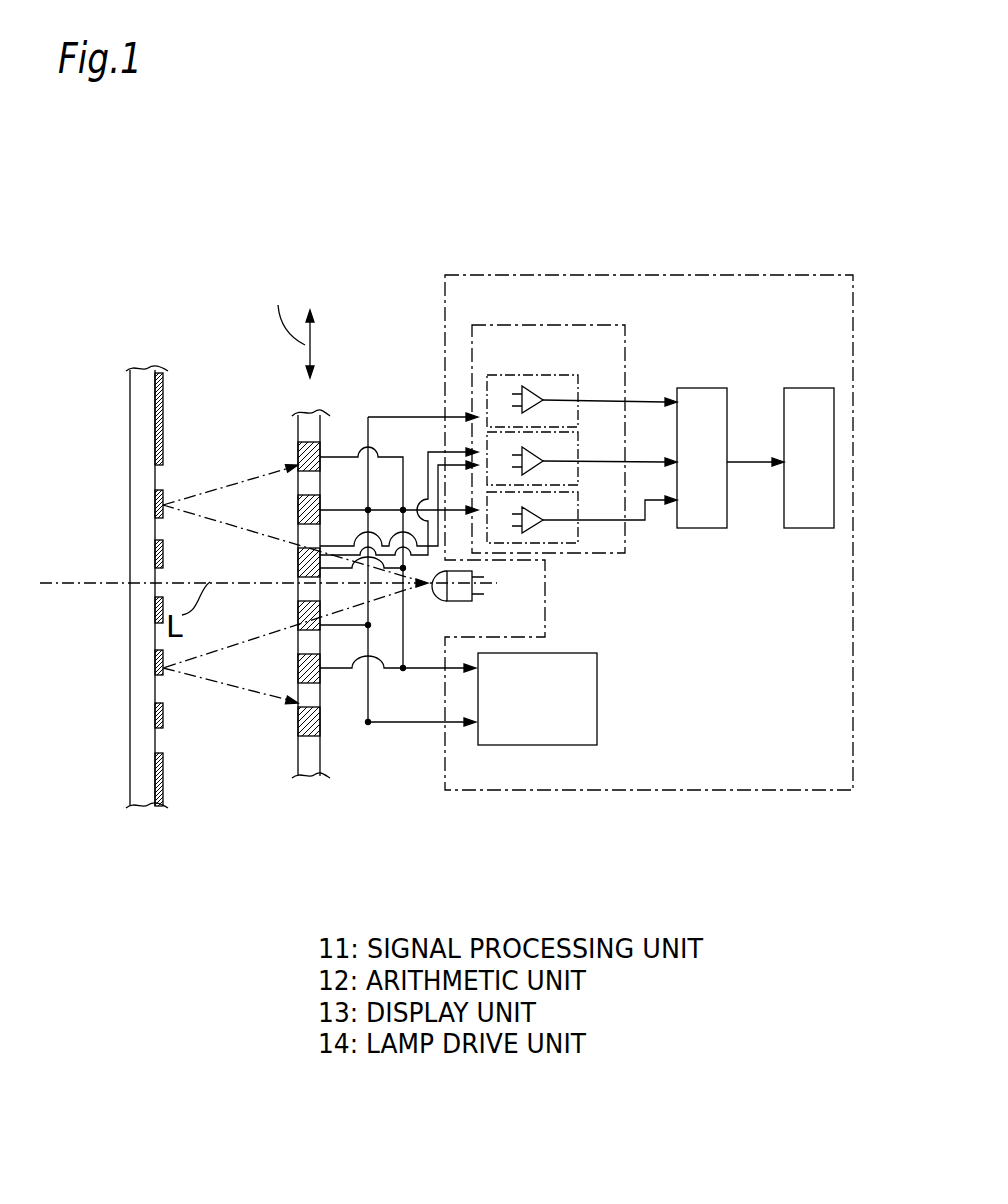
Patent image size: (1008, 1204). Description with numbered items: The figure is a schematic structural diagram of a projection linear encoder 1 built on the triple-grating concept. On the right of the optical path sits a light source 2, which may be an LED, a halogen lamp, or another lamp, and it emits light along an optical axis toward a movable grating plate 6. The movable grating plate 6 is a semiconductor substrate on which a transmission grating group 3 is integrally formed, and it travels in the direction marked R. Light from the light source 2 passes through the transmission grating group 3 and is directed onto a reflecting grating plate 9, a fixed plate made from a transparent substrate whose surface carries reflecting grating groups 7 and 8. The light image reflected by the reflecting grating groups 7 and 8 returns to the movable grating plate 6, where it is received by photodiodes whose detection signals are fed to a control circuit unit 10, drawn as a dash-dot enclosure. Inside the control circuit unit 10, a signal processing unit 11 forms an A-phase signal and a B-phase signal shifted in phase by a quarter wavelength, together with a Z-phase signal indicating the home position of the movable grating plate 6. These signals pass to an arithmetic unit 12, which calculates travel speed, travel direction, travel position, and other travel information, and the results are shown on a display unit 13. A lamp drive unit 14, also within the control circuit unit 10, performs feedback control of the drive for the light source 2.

The projection linear encoder 1 is at (373, 292).
The light source 2 is at (450, 607).
The transmission grating group 3 is at (322, 478).
The movable grating plate 6 is at (315, 792).
The reflecting grating group 7 is at (206, 589).
The reflecting grating group 8 is at (160, 710).
The reflecting grating plate 9 is at (120, 770).
The control circuit unit 10 is at (677, 275).
The signal processing unit 11 is at (530, 325).
The arithmetic unit 12 is at (700, 388).
The display unit 13 is at (800, 388).
The lamp drive unit 14 is at (600, 685).